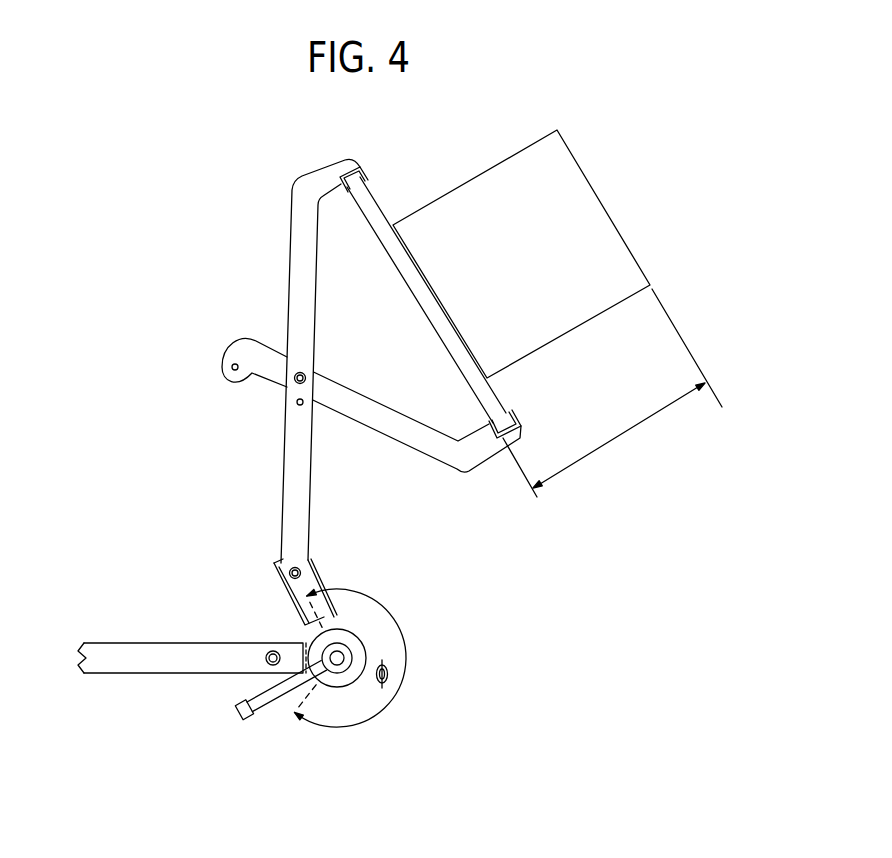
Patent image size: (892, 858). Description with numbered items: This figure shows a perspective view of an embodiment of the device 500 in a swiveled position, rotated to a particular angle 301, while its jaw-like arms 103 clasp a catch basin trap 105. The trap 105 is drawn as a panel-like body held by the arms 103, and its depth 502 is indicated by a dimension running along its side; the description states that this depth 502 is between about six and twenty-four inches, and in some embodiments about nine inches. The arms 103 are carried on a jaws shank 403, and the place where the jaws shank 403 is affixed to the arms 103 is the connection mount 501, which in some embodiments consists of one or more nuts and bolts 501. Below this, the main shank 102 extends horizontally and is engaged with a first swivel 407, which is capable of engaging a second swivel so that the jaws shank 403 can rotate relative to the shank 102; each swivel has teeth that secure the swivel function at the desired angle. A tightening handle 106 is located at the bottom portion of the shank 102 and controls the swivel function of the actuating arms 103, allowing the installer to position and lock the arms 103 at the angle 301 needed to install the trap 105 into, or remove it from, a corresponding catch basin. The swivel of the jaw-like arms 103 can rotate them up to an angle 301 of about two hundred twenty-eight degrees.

The device 500 is at (161, 243).
The shank 102 is at (160, 652).
The jaw-like arms 103 is at (292, 252).
The catch basin trap 105 is at (497, 173).
The tightening handle 106 is at (245, 718).
The angle 301 is at (388, 672).
The jaws shank 403 is at (332, 620).
The first swivel 407 is at (357, 650).
The connection mount 501 is at (283, 563).
The depth 502 is at (617, 438).